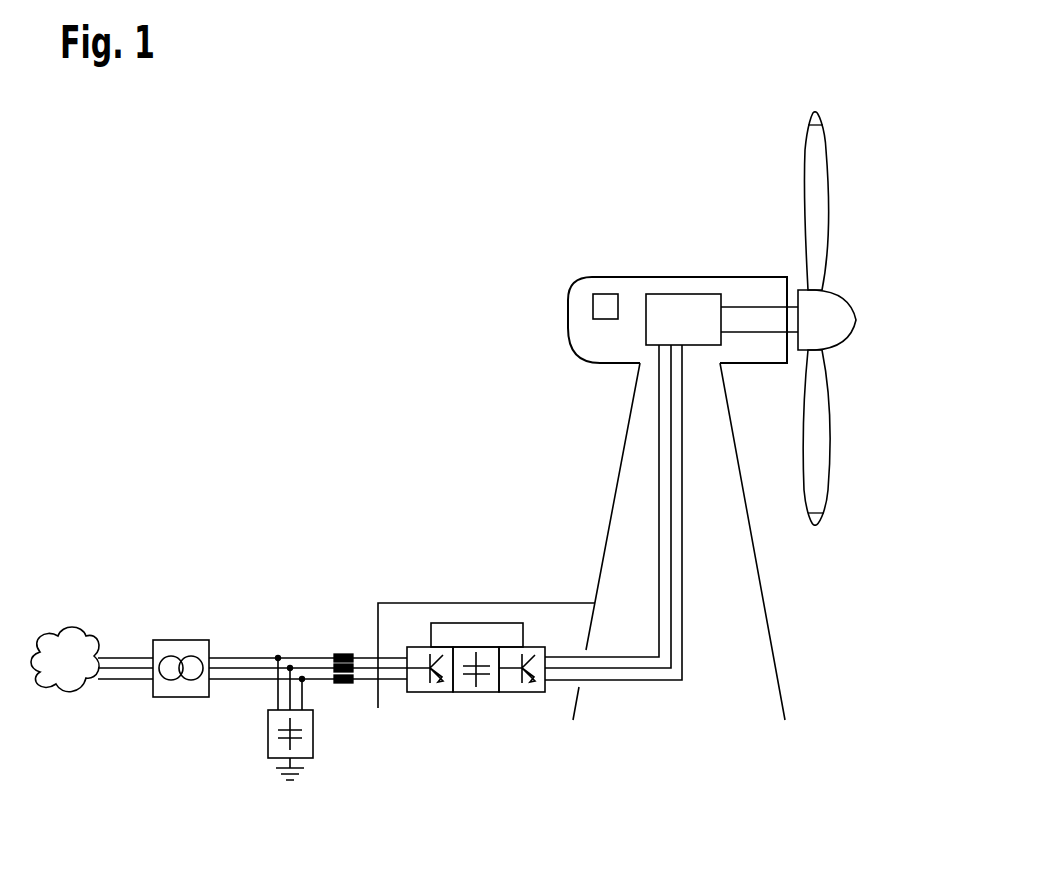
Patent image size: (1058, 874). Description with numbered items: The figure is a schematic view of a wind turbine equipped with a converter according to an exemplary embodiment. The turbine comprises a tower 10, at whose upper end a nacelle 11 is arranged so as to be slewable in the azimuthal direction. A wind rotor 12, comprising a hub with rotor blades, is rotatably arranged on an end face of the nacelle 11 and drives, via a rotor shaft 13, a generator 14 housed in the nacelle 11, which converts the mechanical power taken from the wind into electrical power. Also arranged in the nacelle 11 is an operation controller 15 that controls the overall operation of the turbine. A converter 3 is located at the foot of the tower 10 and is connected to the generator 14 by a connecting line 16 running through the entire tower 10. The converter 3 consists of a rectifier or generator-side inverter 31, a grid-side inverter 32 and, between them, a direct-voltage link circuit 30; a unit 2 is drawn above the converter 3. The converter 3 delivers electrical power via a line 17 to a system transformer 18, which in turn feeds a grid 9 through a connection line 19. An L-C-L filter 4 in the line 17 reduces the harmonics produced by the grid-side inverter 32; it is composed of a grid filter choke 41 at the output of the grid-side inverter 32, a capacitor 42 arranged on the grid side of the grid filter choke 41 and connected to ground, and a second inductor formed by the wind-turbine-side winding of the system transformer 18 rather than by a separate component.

The control unit 2 is at (480, 623).
The converter 3 is at (466, 656).
The L-C-L filter 4 is at (290, 640).
The grid 9 is at (52, 675).
The tower 10 is at (765, 613).
The nacelle 11 is at (568, 316).
The wind rotor 12 is at (858, 320).
The rotor shaft 13 is at (755, 307).
The generator 14 is at (679, 294).
The operation controller 15 is at (606, 294).
The connecting line 16 is at (659, 478).
The line 17 is at (242, 657).
The system transformer 18 is at (181, 640).
The connection line 19 is at (120, 680).
The direct-voltage link circuit 30 is at (476, 692).
The generator-side inverter 31 is at (522, 692).
The grid-side inverter 32 is at (430, 692).
The grid filter choke 41 is at (345, 683).
The capacitor 42 is at (268, 733).